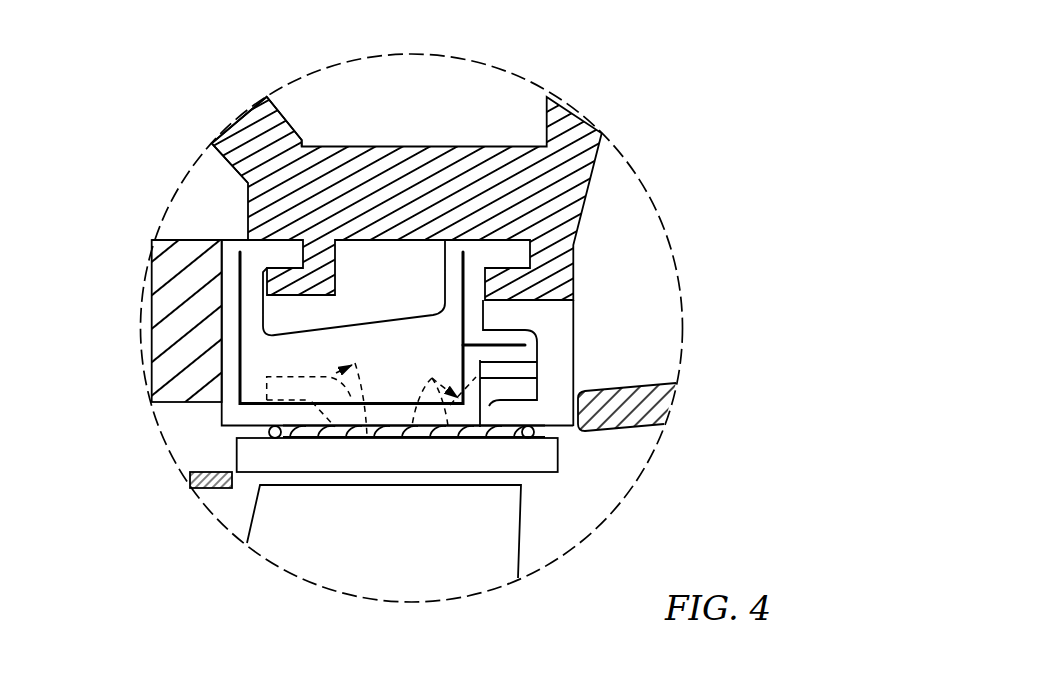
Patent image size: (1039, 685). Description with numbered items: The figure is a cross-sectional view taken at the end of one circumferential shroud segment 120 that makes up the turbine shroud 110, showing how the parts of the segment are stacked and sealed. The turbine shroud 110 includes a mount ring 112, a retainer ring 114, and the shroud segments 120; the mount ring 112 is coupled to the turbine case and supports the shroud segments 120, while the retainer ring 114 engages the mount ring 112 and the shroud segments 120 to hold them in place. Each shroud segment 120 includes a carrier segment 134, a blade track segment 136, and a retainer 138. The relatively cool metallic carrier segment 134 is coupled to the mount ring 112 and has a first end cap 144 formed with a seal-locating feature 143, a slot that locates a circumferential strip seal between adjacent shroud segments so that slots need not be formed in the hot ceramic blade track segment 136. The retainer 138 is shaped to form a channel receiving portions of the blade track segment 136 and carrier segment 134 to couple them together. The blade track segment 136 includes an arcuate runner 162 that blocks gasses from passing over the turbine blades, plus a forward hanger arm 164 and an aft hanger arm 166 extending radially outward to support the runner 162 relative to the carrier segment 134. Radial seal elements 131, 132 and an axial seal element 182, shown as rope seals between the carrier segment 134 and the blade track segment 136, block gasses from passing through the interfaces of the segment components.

The turbine shroud 110 is at (606, 302).
The mount ring 112 is at (299, 110).
The retainer ring 114 is at (173, 227).
The shroud segment 120 is at (191, 412).
The radial seal element 131 is at (260, 432).
The radial seal element 132 is at (546, 432).
The carrier segment 134 is at (399, 297).
The blade track segment 136 is at (447, 482).
The retainer 138 is at (581, 374).
The seal-locating feature 143 is at (235, 355).
The first end cap 144 is at (377, 361).
The arcuate runner 162 is at (487, 453).
The forward hanger arm 164 is at (355, 363).
The aft hanger arm 166 is at (410, 427).
The axial seal element 182 is at (297, 444).